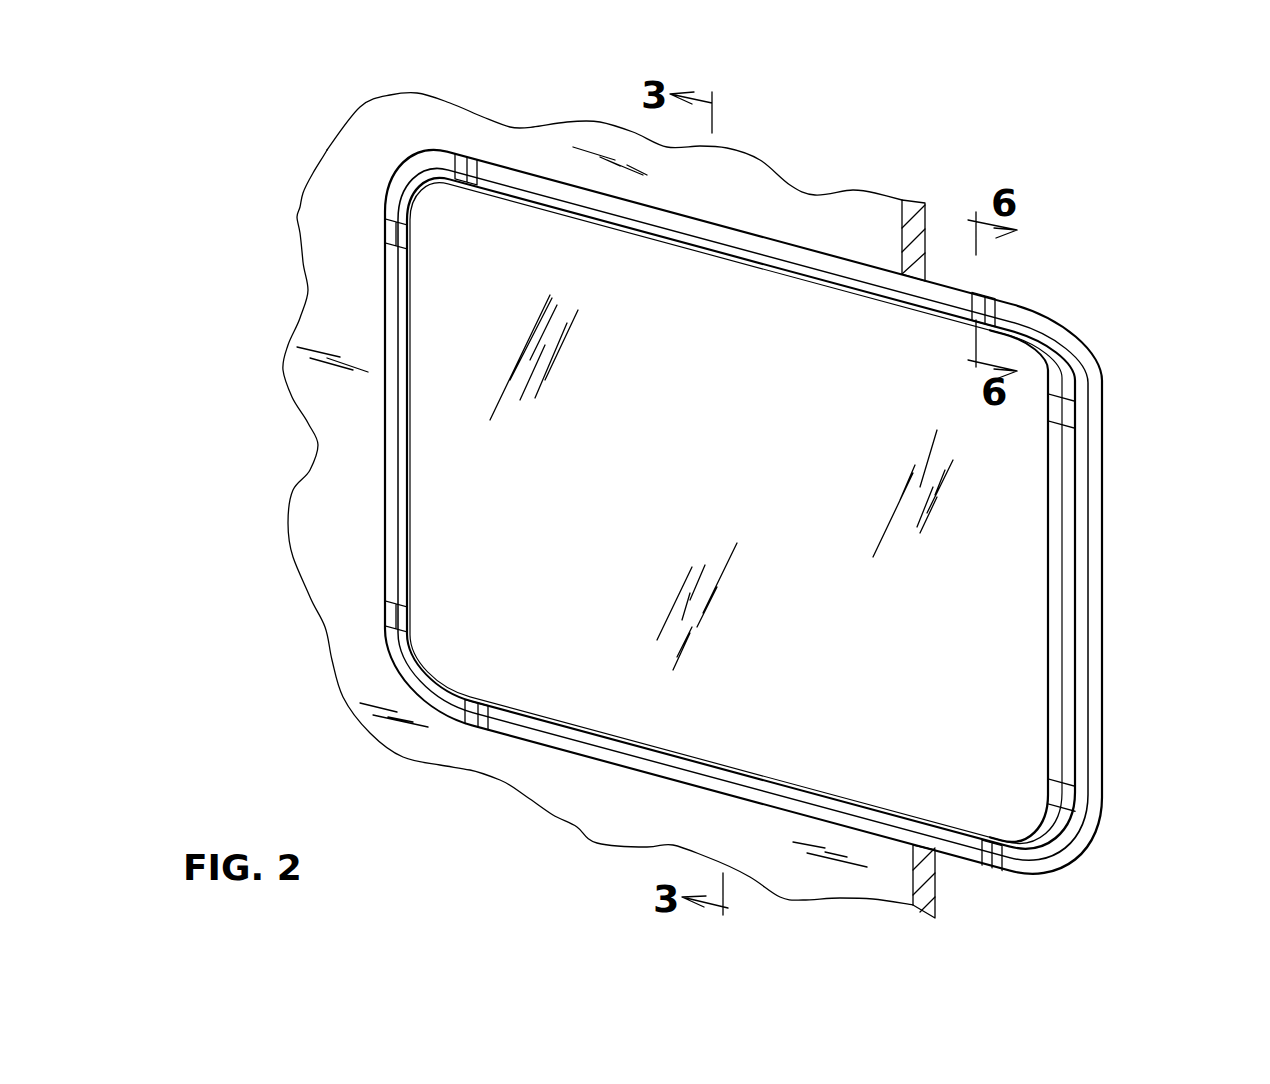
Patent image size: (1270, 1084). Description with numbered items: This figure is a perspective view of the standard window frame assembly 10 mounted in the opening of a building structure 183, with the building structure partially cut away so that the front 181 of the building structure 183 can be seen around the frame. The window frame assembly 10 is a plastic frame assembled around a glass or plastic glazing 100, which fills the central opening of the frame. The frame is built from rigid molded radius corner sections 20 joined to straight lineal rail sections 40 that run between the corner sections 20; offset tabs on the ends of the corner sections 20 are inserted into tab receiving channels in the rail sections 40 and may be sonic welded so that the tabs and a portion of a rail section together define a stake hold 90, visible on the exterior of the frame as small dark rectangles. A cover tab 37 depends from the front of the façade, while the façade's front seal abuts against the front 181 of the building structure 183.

The window frame assembly 10 is at (843, 175).
The corner section 20 is at (1083, 321).
The cover tab 37 is at (476, 722).
The lineal rail section 40 is at (383, 422).
The stake hold 90 is at (977, 305).
The glazing 100 is at (738, 468).
The front of the building structure 181 is at (762, 216).
The building structure 183 is at (928, 879).